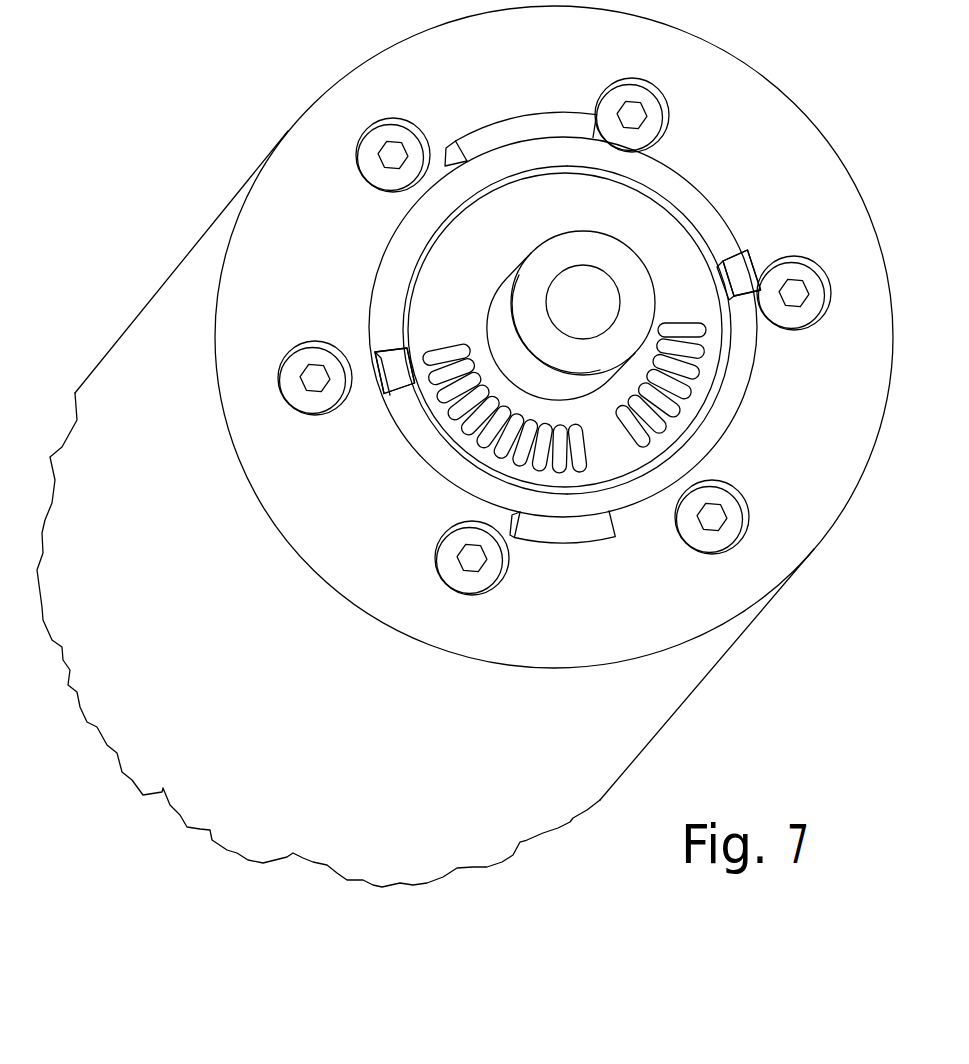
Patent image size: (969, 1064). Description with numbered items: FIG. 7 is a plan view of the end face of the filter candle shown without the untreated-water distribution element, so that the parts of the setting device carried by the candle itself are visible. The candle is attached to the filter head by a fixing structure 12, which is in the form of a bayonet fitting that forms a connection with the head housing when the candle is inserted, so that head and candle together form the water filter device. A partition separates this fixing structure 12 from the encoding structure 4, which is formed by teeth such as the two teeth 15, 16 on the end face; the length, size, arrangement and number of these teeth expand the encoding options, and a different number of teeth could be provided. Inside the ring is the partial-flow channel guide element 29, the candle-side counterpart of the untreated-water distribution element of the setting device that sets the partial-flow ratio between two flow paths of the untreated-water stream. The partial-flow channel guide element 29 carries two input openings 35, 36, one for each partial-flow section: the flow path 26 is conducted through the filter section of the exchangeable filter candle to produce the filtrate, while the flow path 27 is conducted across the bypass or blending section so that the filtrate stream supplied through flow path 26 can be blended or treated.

The encoding structure 4 is at (743, 272).
The fixing structure 12 is at (505, 133).
The tooth 15 is at (737, 262).
The tooth 16 is at (392, 347).
The flow path 26 is at (441, 438).
The flow path 27 is at (716, 386).
The partial-flow channel guide element 29 is at (625, 447).
The input opening 35 is at (448, 338).
The input opening 36 is at (674, 317).